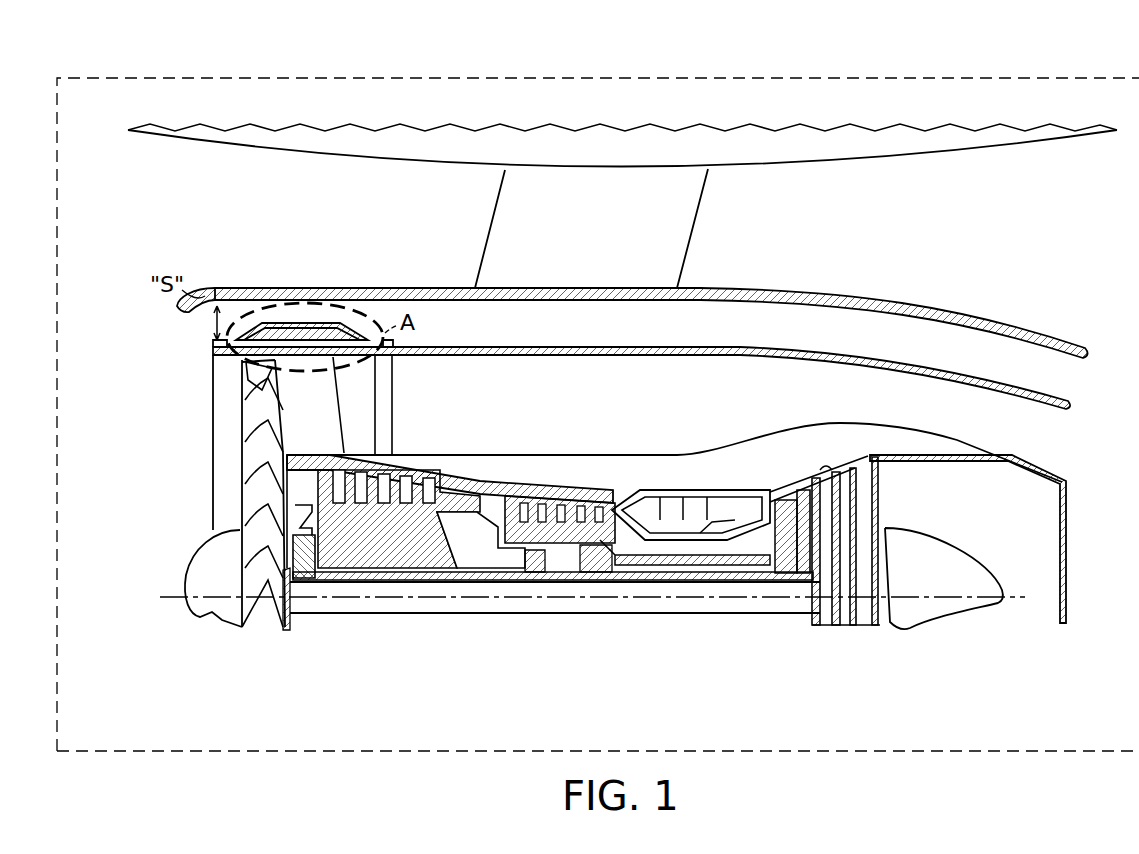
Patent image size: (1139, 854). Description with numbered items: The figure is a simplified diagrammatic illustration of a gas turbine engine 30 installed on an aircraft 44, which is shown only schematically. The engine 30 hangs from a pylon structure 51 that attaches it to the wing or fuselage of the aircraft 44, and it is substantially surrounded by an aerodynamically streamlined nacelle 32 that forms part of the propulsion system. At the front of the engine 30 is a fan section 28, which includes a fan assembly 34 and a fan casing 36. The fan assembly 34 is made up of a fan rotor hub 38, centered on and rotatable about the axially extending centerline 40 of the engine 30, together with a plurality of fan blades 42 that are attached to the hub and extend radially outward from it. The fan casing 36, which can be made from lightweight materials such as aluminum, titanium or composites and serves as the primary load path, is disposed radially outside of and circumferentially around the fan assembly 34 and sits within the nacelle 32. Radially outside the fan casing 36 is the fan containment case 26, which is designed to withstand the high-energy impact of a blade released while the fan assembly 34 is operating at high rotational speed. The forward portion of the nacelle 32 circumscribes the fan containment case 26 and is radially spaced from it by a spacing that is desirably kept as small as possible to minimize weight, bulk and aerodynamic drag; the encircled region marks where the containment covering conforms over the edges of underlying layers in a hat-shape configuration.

The fan containment case 26 is at (262, 306).
The fan section 28 is at (390, 283).
The gas turbine engine 30 is at (820, 680).
The nacelle 32 is at (446, 288).
The fan assembly 34 is at (210, 562).
The fan casing 36 is at (213, 498).
The fan rotor hub 38 is at (260, 450).
The centerline 40 is at (315, 608).
The fan blades 42 is at (258, 388).
The aircraft 44 is at (1054, 77).
The pylon structure 51 is at (698, 211).